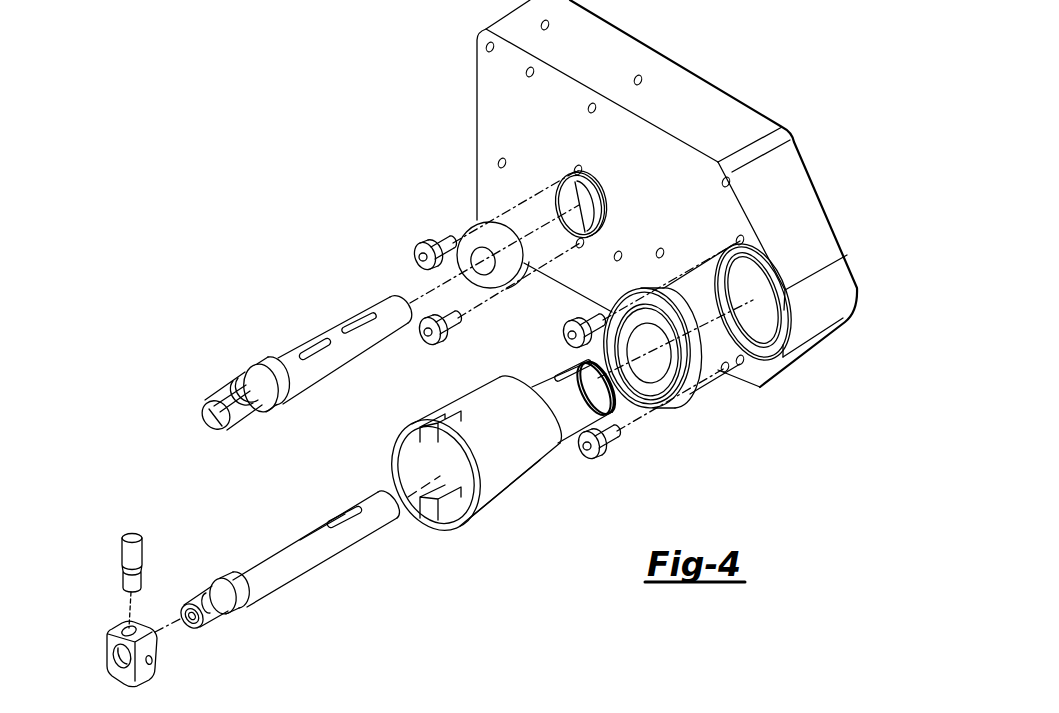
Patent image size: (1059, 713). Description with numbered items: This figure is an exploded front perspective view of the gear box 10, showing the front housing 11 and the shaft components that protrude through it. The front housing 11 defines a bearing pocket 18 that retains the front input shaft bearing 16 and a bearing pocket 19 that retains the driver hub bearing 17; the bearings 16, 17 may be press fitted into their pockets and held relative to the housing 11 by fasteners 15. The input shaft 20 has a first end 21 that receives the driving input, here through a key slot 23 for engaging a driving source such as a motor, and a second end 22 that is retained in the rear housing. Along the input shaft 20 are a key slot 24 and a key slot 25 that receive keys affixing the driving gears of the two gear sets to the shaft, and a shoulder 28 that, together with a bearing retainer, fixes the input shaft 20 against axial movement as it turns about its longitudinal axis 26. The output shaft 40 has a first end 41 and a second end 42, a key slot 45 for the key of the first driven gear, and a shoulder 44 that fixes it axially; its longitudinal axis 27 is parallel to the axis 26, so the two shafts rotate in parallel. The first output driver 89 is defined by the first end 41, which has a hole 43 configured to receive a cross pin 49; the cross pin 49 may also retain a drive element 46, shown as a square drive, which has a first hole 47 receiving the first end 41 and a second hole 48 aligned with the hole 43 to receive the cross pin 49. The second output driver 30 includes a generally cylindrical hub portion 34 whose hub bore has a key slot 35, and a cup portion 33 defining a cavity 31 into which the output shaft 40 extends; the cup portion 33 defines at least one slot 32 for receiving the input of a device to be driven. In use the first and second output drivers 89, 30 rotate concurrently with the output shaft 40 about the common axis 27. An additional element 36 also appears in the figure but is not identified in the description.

The gear box 10 is at (322, 104).
The front housing 11 is at (752, 108).
The fasteners 15 is at (415, 248).
The front input shaft bearing 16 is at (465, 232).
The driver hub bearing 17 is at (700, 403).
The bearing pocket 18 is at (588, 245).
The bearing pocket 19 is at (716, 252).
The input shaft 20 is at (282, 344).
The first end 21 is at (228, 433).
The second end 22 is at (379, 292).
The key slot 23 is at (232, 388).
The key slot 24 is at (318, 346).
The key slot 25 is at (368, 320).
The longitudinal axis 26 is at (400, 280).
The longitudinal axis 27 is at (393, 552).
The shoulder 28 is at (258, 370).
The second output driver 30 is at (462, 467).
The cavity 31 is at (421, 463).
The slot 32 is at (430, 424).
The cup portion 33 is at (523, 503).
The hub portion 34 is at (547, 385).
The key slot 35 is at (577, 362).
The bearing 36 is at (615, 407).
The output shaft 40 is at (297, 580).
The first end 41 is at (178, 604).
The second end 42 is at (368, 492).
The hole 43 is at (212, 612).
The shoulder 44 is at (225, 583).
The key slot 45 is at (338, 522).
The drive element 46 is at (139, 640).
The first hole 47 is at (117, 657).
The second hole 48 is at (125, 627).
The cross pin 49 is at (123, 555).
The first output driver 89 is at (136, 640).